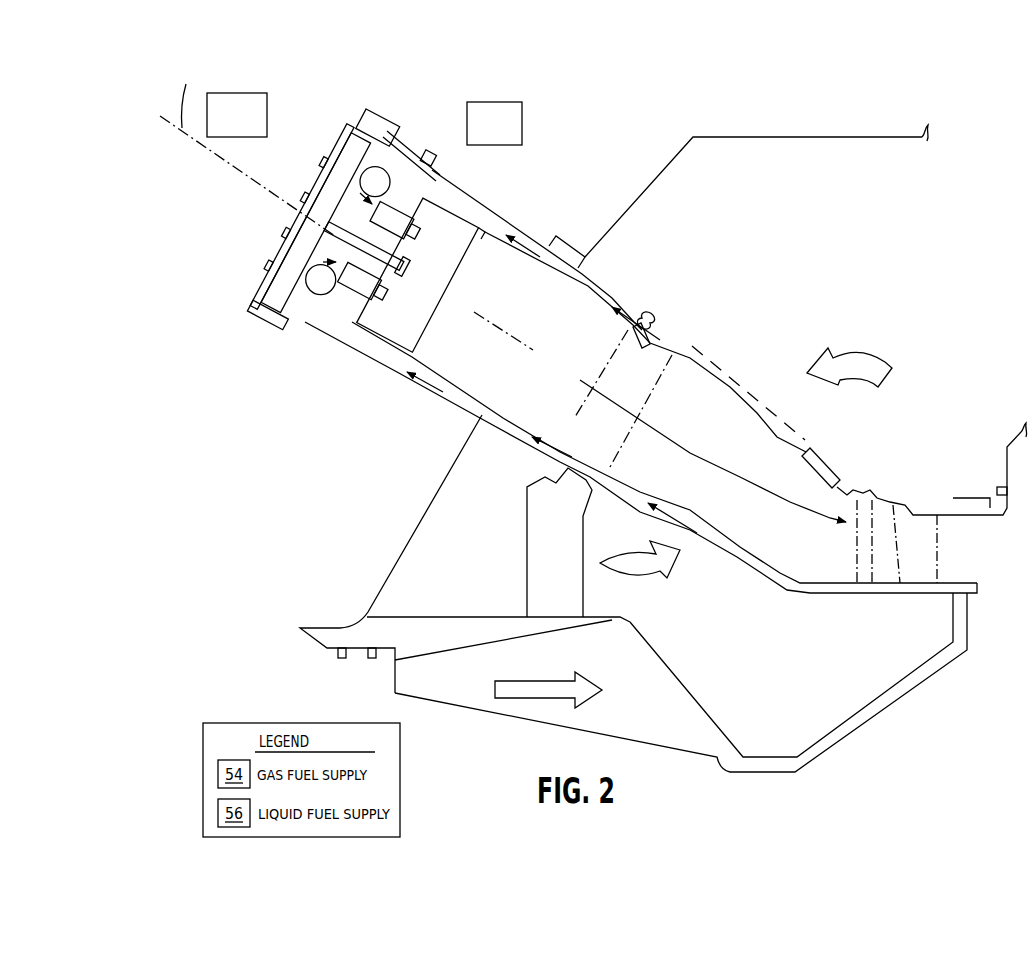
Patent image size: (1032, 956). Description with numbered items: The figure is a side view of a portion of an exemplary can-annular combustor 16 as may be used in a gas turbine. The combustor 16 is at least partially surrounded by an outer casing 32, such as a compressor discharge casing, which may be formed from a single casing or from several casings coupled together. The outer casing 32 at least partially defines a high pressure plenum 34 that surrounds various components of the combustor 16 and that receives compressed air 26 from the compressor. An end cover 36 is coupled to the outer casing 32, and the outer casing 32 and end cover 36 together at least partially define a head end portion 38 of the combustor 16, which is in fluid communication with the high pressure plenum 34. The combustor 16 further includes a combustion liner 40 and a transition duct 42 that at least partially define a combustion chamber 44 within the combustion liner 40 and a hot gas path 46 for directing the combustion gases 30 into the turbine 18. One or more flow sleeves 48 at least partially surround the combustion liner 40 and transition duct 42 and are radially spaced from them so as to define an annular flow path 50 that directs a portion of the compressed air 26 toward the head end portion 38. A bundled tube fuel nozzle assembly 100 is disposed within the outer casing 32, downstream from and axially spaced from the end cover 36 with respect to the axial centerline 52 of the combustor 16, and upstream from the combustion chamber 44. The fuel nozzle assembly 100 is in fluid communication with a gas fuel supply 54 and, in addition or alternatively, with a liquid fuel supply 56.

The combustor 16 is at (556, 130).
The turbine 18 is at (932, 503).
The compressed air 26 is at (408, 126).
The combustion gases 30 is at (688, 452).
The outer casing 32 is at (623, 205).
The high pressure plenum 34 is at (919, 255).
The end cover 36 is at (280, 287).
The head end portion 38 is at (428, 152).
The combustion liner 40 is at (588, 278).
The transition duct 42 is at (758, 420).
The combustion chamber 44 is at (505, 306).
The hot gas path 46 is at (713, 448).
The flow sleeve 48 is at (612, 292).
The annular flow path 50 is at (457, 402).
The axial centerline 52 is at (200, 143).
The gas fuel supply 54 is at (295, 214).
The liquid fuel supply 56 is at (433, 153).
The bundled tube fuel nozzle assembly 100 is at (373, 340).